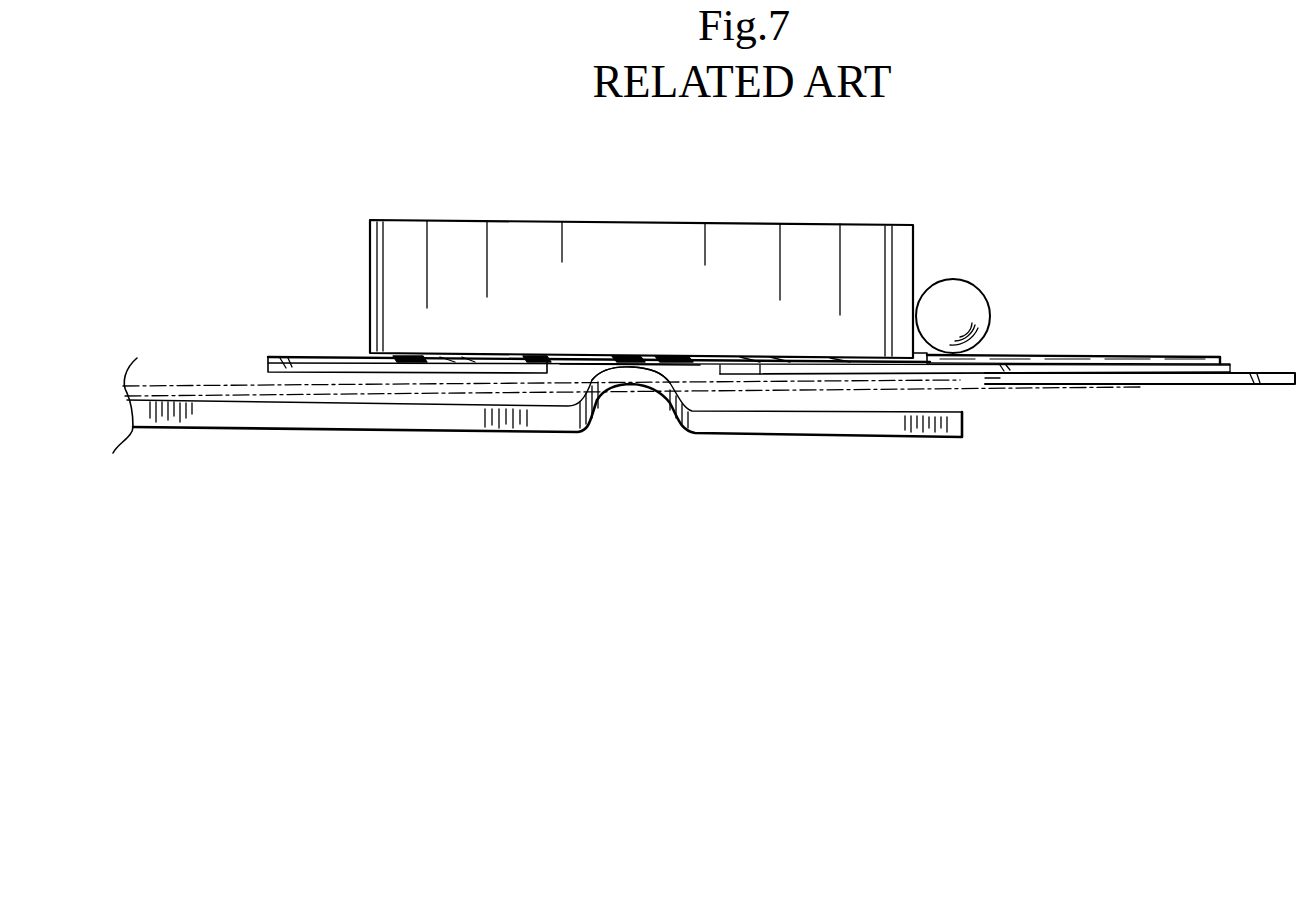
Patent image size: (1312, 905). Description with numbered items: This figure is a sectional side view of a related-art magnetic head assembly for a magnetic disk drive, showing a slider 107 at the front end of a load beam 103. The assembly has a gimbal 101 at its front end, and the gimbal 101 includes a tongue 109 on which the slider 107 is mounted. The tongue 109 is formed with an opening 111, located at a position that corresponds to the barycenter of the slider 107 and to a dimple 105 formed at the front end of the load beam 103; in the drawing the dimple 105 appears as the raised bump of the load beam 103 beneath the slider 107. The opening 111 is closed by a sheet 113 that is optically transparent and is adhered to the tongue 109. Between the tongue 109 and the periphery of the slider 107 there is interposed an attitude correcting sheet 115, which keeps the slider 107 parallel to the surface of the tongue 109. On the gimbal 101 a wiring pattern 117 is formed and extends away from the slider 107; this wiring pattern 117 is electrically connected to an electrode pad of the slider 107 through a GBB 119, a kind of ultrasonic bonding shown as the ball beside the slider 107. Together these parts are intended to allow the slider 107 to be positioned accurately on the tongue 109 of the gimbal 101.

The gimbal 101 is at (1086, 386).
The load beam 103 is at (273, 417).
The dimple 105 is at (595, 365).
The slider 107 is at (375, 290).
The tongue 109 is at (318, 358).
The opening 111 is at (572, 368).
The sheet 113 is at (690, 365).
The attitude correcting sheet 115 is at (417, 357).
The wiring pattern 117 is at (1073, 353).
The GBB 119 is at (953, 302).